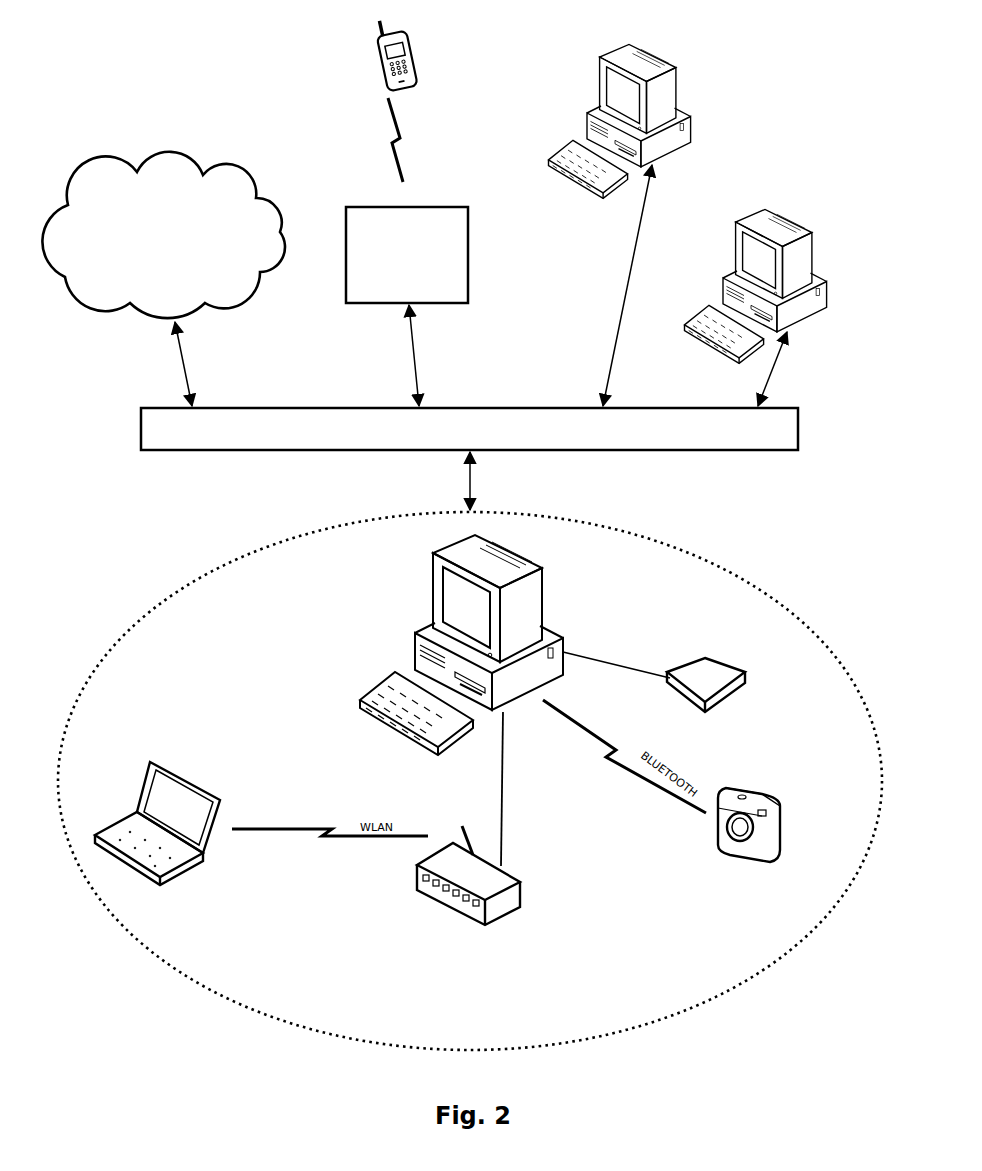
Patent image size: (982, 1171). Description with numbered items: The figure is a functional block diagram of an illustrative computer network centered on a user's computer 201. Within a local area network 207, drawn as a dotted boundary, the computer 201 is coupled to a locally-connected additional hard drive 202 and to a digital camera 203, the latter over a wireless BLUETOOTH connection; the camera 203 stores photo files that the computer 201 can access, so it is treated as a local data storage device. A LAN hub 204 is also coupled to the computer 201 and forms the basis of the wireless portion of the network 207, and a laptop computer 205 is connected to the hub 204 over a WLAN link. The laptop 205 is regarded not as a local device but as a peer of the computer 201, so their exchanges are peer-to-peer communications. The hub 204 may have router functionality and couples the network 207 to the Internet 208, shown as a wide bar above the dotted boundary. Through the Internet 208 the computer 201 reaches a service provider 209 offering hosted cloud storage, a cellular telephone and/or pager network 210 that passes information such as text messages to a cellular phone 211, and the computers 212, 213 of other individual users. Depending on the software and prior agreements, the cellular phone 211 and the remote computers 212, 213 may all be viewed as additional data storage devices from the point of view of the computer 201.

The computer 201 is at (415, 626).
The additional hard drive 202 is at (722, 665).
The digital camera 203 is at (746, 858).
The LAN hub 204 is at (510, 913).
The laptop computer 205 is at (180, 770).
The local area network 207 is at (246, 545).
The Internet 208 is at (469, 429).
The service provider 209 is at (163, 235).
The cellular telephone and/or pager network 210 is at (407, 255).
The cellular phone 211 is at (379, 46).
The remote computer 212 is at (600, 82).
The remote computer 213 is at (800, 231).